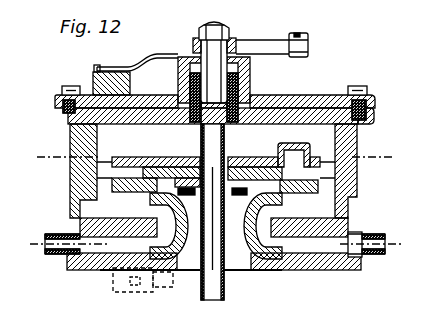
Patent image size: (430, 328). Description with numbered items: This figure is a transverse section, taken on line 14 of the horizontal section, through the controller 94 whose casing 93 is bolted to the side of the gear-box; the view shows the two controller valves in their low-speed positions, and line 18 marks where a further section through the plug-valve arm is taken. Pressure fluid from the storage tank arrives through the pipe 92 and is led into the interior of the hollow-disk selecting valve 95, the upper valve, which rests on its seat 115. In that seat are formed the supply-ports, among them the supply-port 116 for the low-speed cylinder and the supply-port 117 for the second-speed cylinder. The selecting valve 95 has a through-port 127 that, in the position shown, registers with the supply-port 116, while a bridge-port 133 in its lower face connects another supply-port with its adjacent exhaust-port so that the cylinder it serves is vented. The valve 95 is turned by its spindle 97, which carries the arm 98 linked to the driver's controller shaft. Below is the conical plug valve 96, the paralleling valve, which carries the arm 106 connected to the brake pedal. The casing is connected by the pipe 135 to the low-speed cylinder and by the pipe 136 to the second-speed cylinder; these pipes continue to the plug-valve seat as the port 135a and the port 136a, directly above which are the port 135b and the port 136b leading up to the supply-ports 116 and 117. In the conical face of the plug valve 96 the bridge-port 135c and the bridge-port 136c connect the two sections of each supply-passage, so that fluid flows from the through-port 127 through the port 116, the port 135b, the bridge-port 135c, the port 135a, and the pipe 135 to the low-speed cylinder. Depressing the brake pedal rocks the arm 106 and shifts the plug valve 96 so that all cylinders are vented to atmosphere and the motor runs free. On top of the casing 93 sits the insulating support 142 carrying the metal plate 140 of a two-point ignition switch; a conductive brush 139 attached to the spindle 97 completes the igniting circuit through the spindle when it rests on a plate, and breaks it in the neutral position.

The section line 14— 14 is at (216, 156).
The section line 18— 18 is at (220, 246).
The pipe 92 is at (225, 298).
The casing 93 is at (72, 186).
The controller 94 is at (308, 100).
The selecting valve 95 is at (252, 162).
The plug valve 96 is at (265, 272).
The spindle 97 is at (223, 68).
The arm 98 is at (253, 52).
The arm 106 is at (132, 292).
The seat 115 is at (173, 160).
The supply-port 116 is at (110, 172).
The supply-port 117 is at (325, 178).
The through-port 127 is at (100, 163).
The bridge-port 133 is at (288, 152).
The pipe 135 is at (53, 255).
The port 135a is at (108, 255).
The port 135b is at (95, 217).
The bridge-port 135c is at (181, 262).
The pipe 136 is at (375, 257).
The port 136a is at (322, 263).
The port 136b is at (332, 206).
The bridge-port 136c is at (262, 283).
The brush 139 is at (131, 64).
The metal plate 140 is at (97, 69).
The insulating support 142 is at (93, 80).